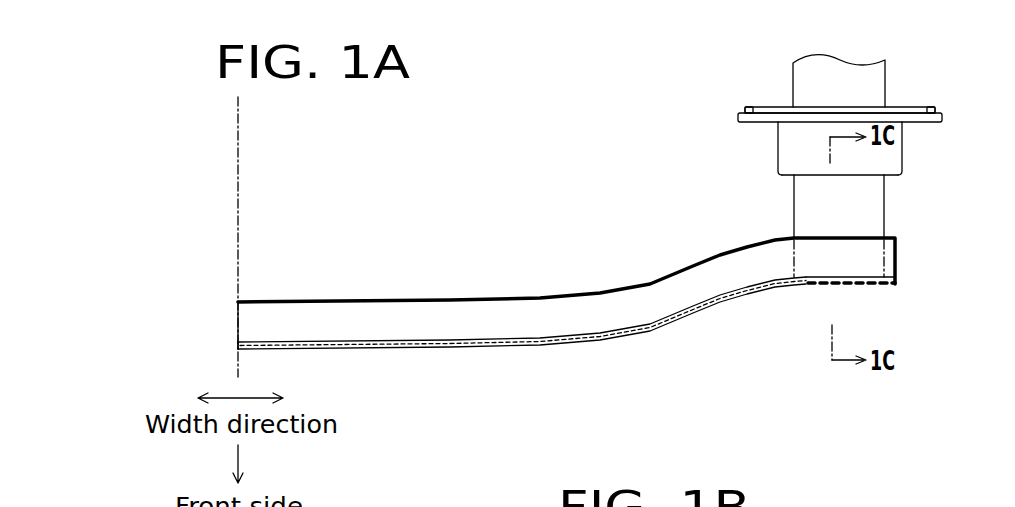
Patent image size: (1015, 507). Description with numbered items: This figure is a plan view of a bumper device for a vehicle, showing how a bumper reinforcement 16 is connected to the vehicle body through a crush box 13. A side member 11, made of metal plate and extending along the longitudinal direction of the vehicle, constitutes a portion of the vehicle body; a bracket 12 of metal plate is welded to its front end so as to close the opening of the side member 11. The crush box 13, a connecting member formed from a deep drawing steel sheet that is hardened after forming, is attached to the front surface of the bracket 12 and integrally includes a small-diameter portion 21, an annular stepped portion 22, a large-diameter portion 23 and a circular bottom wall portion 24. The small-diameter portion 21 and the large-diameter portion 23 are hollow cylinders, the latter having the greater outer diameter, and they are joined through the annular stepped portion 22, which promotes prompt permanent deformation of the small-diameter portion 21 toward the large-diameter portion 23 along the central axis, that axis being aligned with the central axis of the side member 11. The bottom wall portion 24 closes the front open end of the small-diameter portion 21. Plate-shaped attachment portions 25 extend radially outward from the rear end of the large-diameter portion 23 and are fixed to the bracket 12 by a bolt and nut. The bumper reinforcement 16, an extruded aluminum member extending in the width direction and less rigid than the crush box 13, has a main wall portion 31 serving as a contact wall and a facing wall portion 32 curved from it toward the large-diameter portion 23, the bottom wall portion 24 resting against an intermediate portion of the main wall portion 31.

The side member 11 is at (880, 70).
The bracket 12 is at (778, 106).
The crush box 13 is at (844, 146).
The bumper reinforcement 16 is at (372, 350).
The small-diameter portion 21 is at (794, 218).
The annular stepped portion 22 is at (778, 176).
The large-diameter portion 23 is at (800, 141).
The bottom wall portion 24 is at (813, 286).
The attachment portion 25 is at (749, 107).
The main wall portion 31 is at (590, 343).
The facing wall portion 32 is at (545, 303).